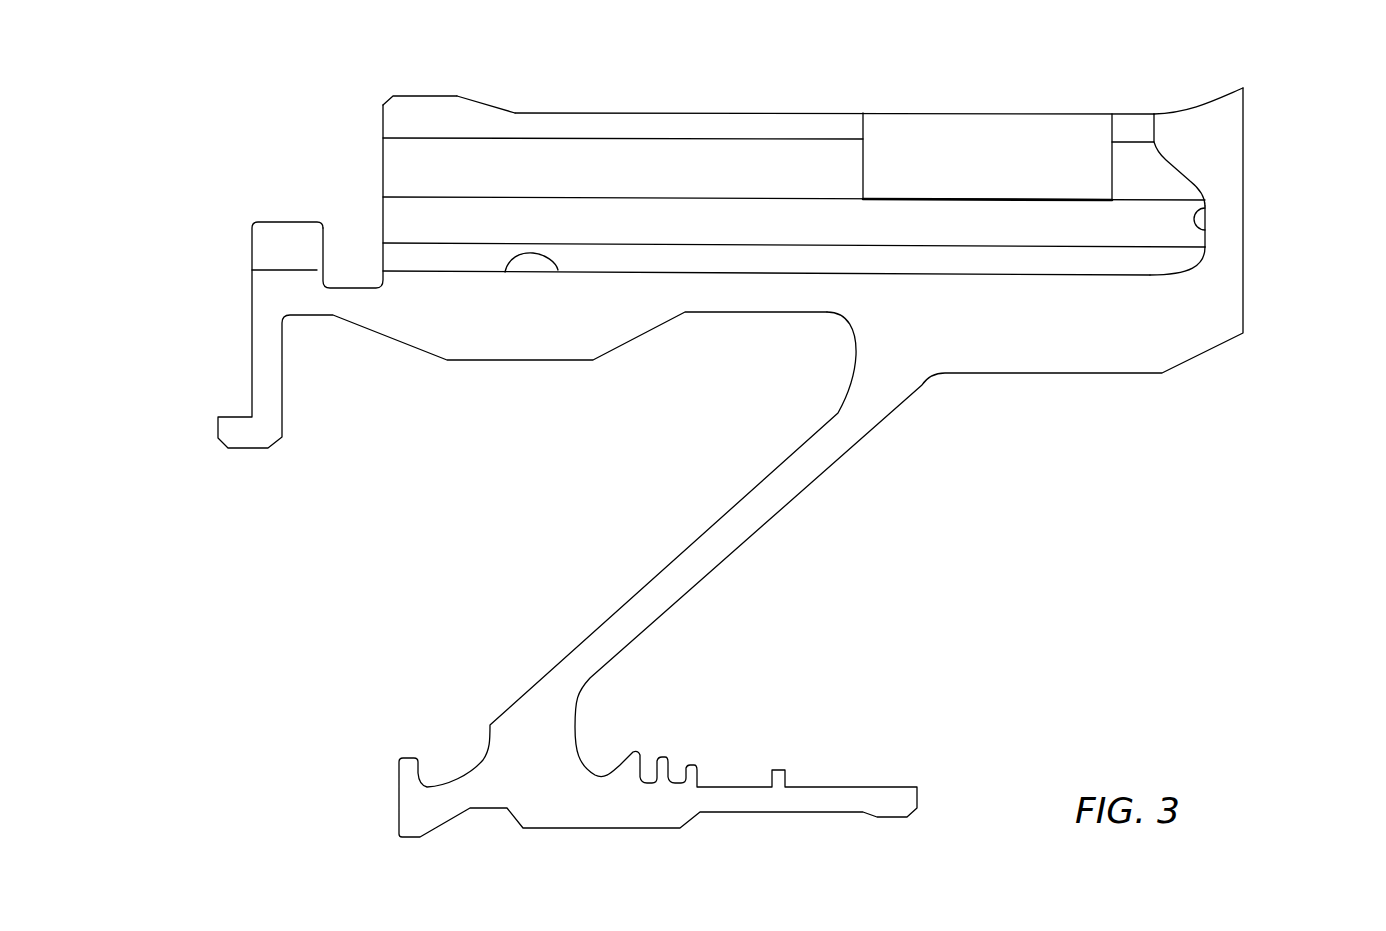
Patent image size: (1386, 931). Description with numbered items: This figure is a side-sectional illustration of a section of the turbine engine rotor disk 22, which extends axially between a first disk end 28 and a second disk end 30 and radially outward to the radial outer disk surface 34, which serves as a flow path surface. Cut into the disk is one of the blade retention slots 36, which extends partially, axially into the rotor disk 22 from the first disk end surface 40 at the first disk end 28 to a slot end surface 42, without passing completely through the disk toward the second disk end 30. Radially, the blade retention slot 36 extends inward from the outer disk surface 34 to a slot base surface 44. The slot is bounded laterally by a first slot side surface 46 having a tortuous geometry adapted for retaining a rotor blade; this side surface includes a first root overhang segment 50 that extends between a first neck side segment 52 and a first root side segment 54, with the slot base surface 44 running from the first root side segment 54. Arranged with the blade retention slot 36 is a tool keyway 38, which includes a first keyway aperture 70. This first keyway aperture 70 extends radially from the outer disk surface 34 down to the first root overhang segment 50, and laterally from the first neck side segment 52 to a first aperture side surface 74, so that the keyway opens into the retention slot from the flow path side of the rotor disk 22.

The turbine engine rotor disk 22 is at (162, 107).
The first disk end 28 is at (195, 358).
The second disk end 30 is at (1275, 320).
The radial outer disk surface 34 is at (1207, 95).
The blade retention slot 36 is at (365, 162).
The tool keyway 38 is at (1009, 133).
The first disk end surface 40 is at (383, 118).
The slot end surface 42 is at (1205, 207).
The slot base surface 44 is at (505, 272).
The first slot side surface 46 is at (682, 130).
The first root overhang segment 50 is at (445, 160).
The first neck side segment 52 is at (493, 123).
The first root side segment 54 is at (535, 220).
The first keyway aperture 70 is at (914, 133).
The first aperture side surface 74 is at (1062, 135).